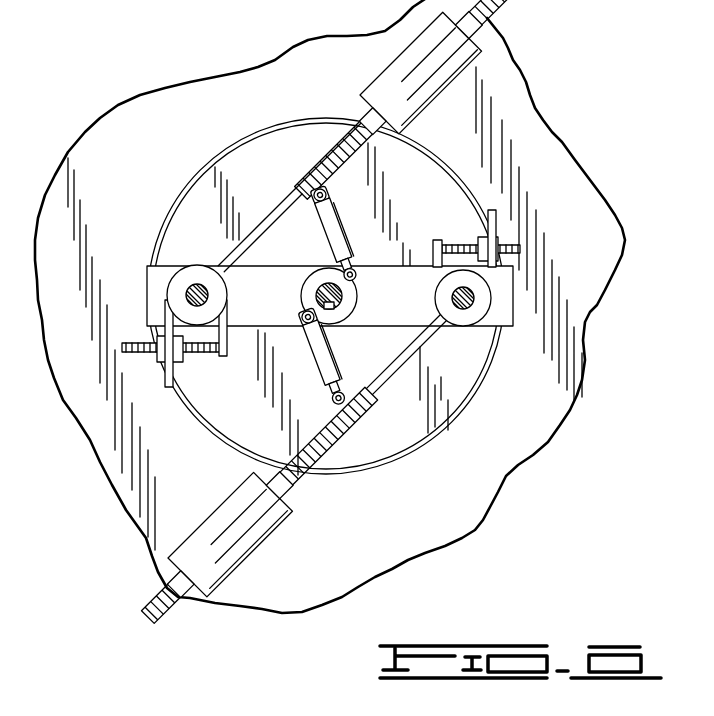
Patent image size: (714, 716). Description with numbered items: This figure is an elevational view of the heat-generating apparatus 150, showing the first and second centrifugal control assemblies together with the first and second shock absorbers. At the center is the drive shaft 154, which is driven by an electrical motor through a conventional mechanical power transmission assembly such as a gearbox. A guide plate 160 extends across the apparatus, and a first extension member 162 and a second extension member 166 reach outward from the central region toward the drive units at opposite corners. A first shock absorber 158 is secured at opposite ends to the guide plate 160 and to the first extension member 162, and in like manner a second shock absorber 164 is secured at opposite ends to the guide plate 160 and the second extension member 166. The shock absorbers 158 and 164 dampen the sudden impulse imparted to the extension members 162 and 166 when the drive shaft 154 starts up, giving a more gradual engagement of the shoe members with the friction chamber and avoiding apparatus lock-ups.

The heat-generating apparatus 150 is at (541, 55).
The drive shaft 154 is at (305, 292).
The first shock absorber 158 is at (340, 220).
The guide plate 160 is at (395, 262).
The first extension member 162 is at (272, 213).
The second shock absorber 164 is at (330, 360).
The second extension member 166 is at (380, 387).